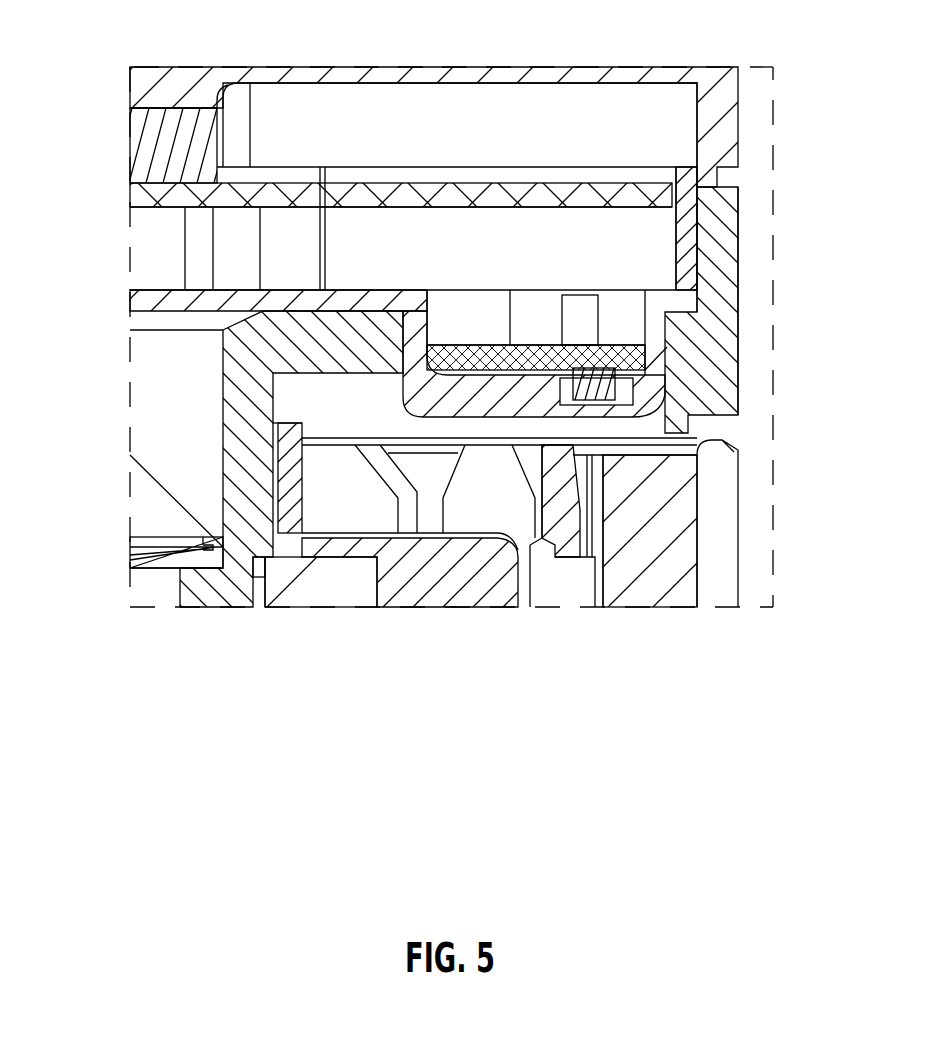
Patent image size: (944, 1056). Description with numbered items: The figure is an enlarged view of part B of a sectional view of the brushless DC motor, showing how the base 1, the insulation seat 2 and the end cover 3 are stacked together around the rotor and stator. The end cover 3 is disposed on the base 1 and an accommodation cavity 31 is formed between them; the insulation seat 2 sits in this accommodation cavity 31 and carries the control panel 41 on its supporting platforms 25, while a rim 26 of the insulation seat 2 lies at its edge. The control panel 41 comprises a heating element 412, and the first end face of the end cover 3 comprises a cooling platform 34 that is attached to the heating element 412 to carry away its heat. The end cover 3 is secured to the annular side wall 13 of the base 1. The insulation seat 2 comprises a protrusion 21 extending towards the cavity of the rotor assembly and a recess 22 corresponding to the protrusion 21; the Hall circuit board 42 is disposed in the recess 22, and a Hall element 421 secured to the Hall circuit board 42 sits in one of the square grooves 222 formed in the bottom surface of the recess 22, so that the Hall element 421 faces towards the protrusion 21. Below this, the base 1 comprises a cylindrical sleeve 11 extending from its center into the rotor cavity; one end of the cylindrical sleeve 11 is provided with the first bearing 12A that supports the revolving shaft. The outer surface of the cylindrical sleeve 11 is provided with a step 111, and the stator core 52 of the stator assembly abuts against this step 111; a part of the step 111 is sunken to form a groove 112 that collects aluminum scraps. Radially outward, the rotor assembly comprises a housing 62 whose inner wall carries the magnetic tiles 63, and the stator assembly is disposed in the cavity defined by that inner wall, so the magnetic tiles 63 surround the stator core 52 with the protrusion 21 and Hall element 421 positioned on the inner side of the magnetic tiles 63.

The base 1 is at (323, 345).
The insulation seat 2 is at (183, 303).
The end cover 3 is at (700, 137).
The cylindrical sleeve 11 is at (130, 568).
The first bearing 12A is at (180, 480).
The annular side wall 13 is at (715, 323).
The protrusion 21 is at (490, 400).
The recess 22 is at (490, 318).
The supporting platform 25 is at (172, 247).
The rim 26 is at (687, 230).
The accommodation cavity 31 is at (465, 138).
The cooling platform 34 is at (178, 95).
The control panel 41 is at (545, 190).
The Hall circuit board 42 is at (600, 340).
The stator core 52 is at (333, 585).
The housing 62 is at (697, 537).
The magnetic tiles 63 is at (648, 555).
The step 111 is at (265, 560).
The groove 112 is at (256, 580).
The square grooves 222 is at (623, 380).
The heating element 412 is at (170, 165).
The Hall element 421 is at (667, 408).
The part B is at (773, 338).